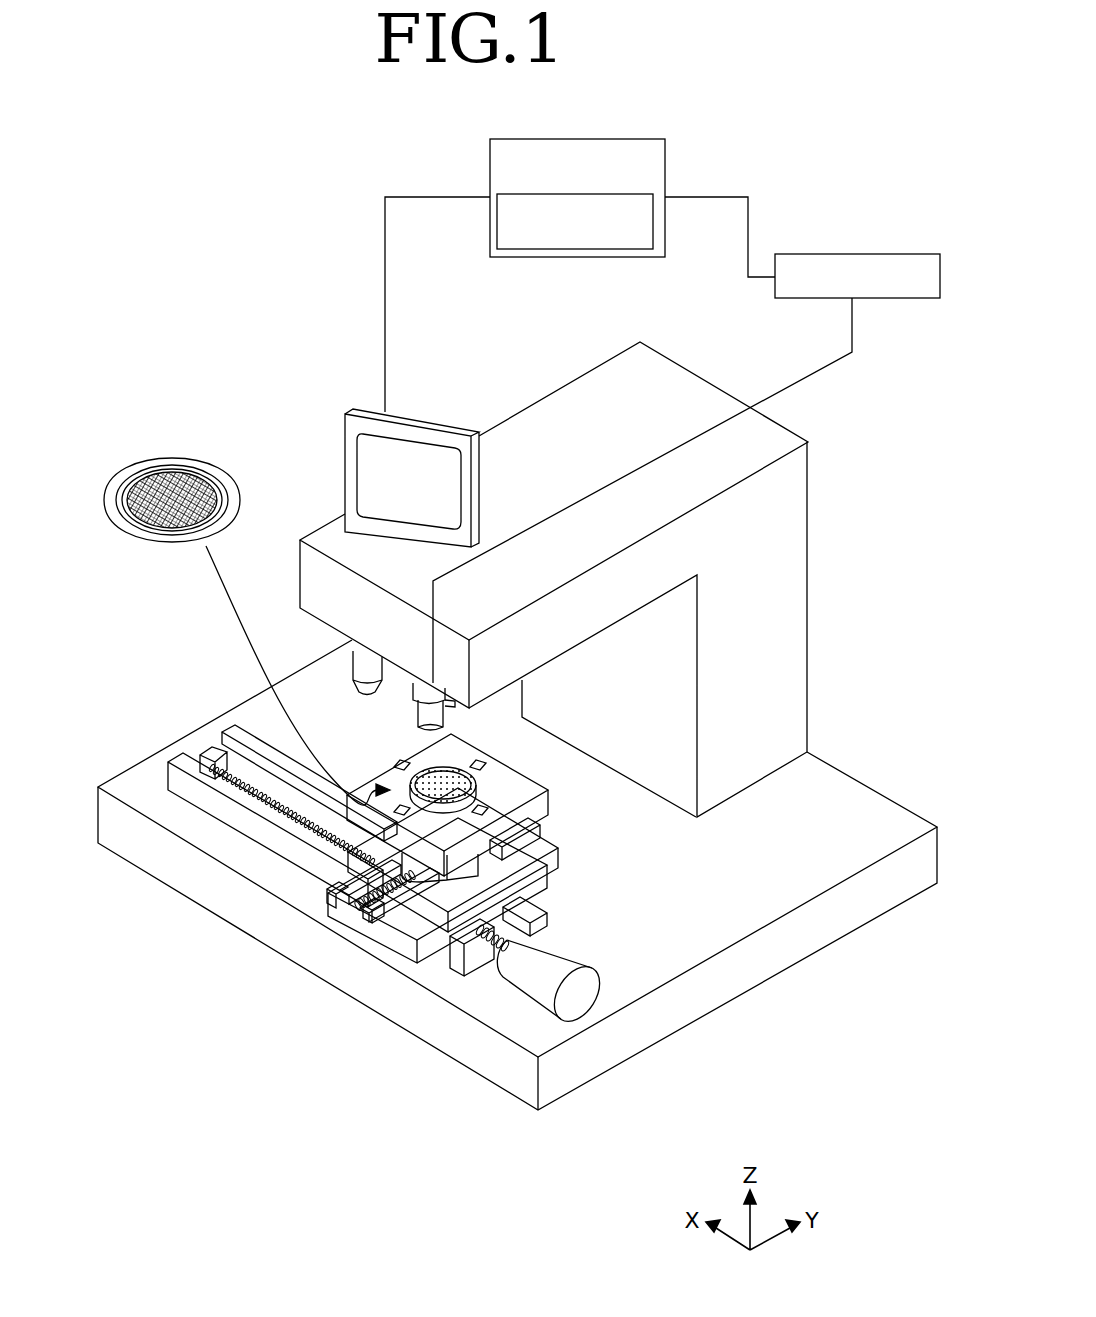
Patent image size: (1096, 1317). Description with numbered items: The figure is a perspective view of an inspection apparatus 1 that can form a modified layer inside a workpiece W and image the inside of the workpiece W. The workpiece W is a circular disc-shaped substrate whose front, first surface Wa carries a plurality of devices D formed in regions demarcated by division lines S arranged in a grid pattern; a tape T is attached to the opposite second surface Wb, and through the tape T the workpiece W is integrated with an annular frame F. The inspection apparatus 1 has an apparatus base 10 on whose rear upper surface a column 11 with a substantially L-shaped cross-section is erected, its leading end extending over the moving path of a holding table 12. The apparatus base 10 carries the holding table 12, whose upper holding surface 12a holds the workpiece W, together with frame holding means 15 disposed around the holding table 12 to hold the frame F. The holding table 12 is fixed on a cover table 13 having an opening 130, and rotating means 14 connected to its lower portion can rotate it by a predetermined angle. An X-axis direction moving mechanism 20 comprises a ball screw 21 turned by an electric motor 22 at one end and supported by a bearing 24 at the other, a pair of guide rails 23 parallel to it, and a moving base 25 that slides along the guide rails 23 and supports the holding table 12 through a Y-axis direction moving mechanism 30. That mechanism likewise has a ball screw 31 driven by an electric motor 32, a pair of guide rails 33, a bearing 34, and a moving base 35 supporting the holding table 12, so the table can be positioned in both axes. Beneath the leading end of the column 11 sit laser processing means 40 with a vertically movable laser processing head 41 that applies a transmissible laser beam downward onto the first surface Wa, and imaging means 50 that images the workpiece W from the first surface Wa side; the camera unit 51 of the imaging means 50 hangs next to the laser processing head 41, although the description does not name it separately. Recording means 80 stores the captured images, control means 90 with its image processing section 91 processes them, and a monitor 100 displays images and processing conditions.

The inspection apparatus 1 is at (262, 384).
The apparatus base 10 is at (842, 792).
The column 11 is at (795, 530).
The holding table 12 is at (259, 805).
The holding surface 12a is at (365, 862).
The cover table 13 is at (460, 872).
The rotating means 14 is at (431, 840).
The opening 130 is at (420, 892).
The frame holding means 15 is at (538, 777).
The X-axis direction moving mechanism 20 is at (564, 1042).
The ball screw 21 is at (553, 1040).
The electric motor 22 is at (586, 1012).
The pair of guide rails 23 is at (176, 762).
The bearing 24 is at (208, 750).
The moving base 25 is at (395, 916).
The Y-axis direction moving mechanism 30 is at (480, 937).
The ball screw 31 is at (522, 868).
The electric motor 32 is at (540, 827).
The pair of guide rails 33 is at (345, 913).
The bearing 34 is at (392, 890).
The moving base 35 is at (556, 917).
The laser processing means 40 is at (315, 668).
The laser processing head 41 is at (352, 670).
The imaging means 50 is at (442, 722).
The camera 51 is at (418, 712).
The recording means 80 is at (858, 254).
The control means 90 is at (662, 163).
The image processing section 91 is at (653, 214).
The monitor 100 is at (432, 421).
The workpiece W is at (219, 466).
The first surface Wa is at (187, 462).
The second surface Wb is at (190, 543).
The devices D is at (162, 480).
The division lines S is at (143, 528).
The annular frame F is at (233, 486).
The tape T is at (220, 517).